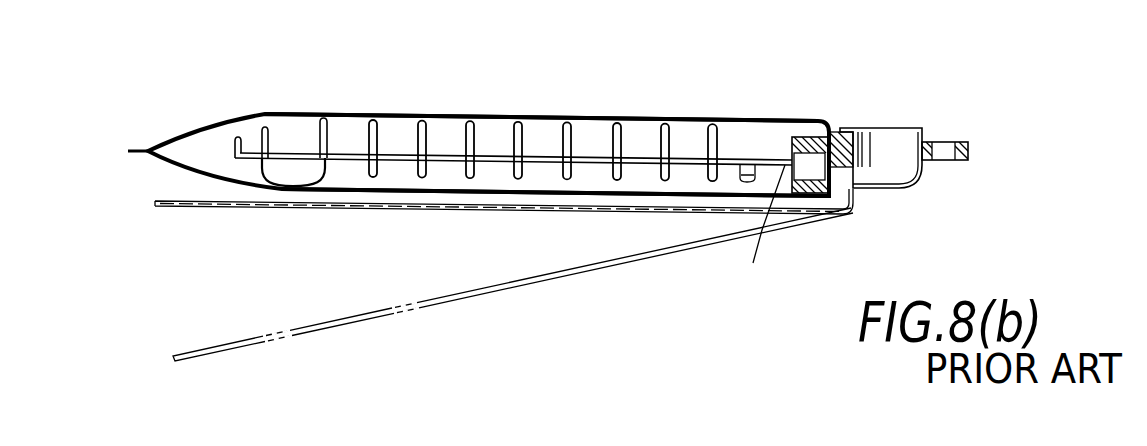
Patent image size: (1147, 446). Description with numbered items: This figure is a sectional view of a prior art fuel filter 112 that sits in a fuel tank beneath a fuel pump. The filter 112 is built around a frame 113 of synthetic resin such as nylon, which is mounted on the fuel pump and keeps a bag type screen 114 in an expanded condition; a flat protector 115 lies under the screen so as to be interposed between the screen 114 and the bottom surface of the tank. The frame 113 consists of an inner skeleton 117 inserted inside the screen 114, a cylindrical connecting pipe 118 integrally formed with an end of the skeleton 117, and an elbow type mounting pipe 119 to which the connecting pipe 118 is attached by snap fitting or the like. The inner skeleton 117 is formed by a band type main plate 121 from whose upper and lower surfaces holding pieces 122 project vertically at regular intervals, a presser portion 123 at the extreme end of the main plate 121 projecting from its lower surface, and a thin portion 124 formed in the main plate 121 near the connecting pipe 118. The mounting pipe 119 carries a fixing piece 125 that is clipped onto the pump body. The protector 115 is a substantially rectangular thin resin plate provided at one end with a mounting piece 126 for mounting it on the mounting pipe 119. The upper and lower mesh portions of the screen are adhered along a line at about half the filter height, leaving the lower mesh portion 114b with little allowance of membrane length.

The filter 112 is at (261, 100).
The frame 113 is at (883, 73).
The bag type screen 114 is at (664, 112).
The lower mesh portion 114b is at (347, 191).
The flat protector 115 is at (419, 213).
The inner skeleton 117 is at (729, 149).
The cylindrical connecting pipe 118 is at (793, 137).
The elbow type mounting pipe 119 is at (843, 129).
The band type main plate 121 is at (598, 156).
The holding pieces 122 is at (373, 119).
The presser portion 123 is at (297, 165).
The thin portion 124 is at (771, 234).
The fixing piece 125 is at (962, 141).
The mounting piece 126 is at (857, 200).